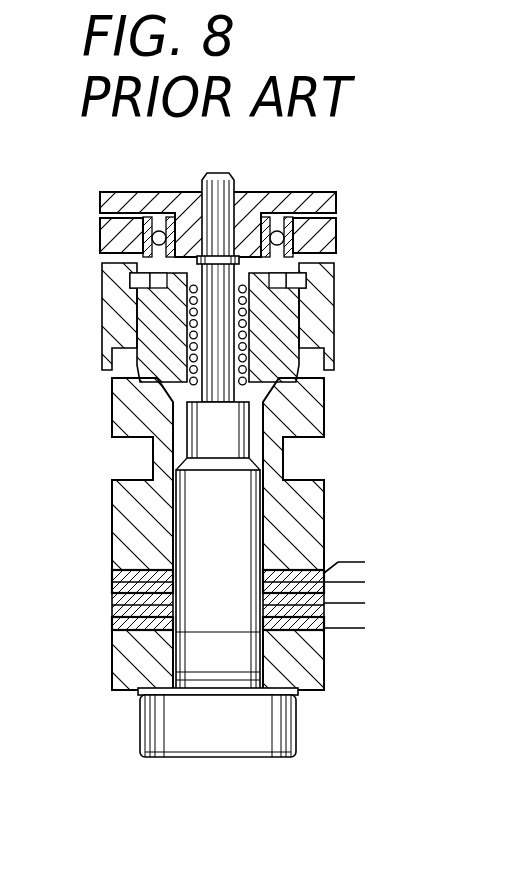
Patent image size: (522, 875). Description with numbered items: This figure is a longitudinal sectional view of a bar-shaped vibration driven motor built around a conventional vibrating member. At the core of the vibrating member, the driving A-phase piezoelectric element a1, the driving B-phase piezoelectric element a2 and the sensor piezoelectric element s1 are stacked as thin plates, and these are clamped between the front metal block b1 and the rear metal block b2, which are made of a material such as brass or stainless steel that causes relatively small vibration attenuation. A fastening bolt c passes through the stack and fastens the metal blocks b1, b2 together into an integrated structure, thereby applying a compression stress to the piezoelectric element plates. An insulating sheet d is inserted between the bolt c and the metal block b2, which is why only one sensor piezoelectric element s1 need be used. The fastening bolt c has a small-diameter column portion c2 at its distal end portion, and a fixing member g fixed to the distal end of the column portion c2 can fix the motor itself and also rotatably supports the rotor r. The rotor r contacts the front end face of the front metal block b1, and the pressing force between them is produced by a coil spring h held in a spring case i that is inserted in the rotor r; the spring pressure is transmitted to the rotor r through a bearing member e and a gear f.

The fixing member g is at (309, 203).
The bearing member e is at (305, 250).
The gear f is at (333, 245).
The coil spring h is at (185, 322).
The spring case i is at (300, 318).
The rotor r is at (320, 352).
The small-diameter column portion c2 is at (232, 427).
The front metal block b1 is at (300, 513).
The driving A-phase piezoelectric element a1 is at (106, 592).
The driving B-phase piezoelectric element a2 is at (106, 613).
The sensor piezoelectric element s1 is at (106, 632).
The metal block b2 is at (312, 662).
The insulating sheet d is at (300, 690).
The fastening bolt c is at (255, 733).